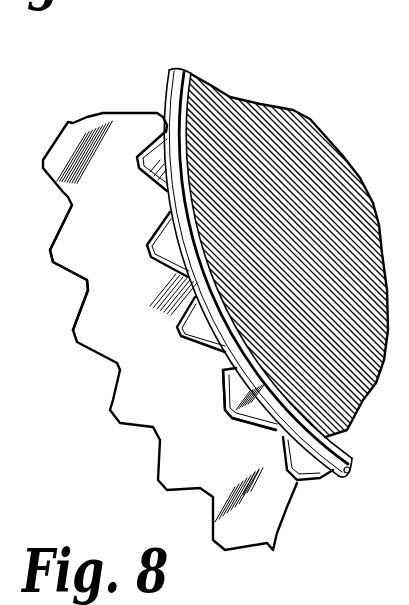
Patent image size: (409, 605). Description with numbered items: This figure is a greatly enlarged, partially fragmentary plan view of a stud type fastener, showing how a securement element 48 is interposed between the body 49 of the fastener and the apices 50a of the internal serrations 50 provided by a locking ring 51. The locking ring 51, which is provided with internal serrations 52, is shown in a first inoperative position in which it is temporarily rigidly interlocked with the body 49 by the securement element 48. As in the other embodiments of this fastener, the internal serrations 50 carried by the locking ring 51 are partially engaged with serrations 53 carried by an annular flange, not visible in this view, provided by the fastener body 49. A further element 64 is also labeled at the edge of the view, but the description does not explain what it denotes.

The securement element 48 is at (194, 76).
The fastener body 49 is at (264, 122).
The internal serrations 50 is at (203, 360).
The apices of internal serrations 50a is at (223, 372).
The locking ring 51 is at (124, 288).
The internal serrations 52 is at (63, 226).
The serrations 53 is at (151, 160).
The adjacent part (partially shown) 64 is at (401, 102).